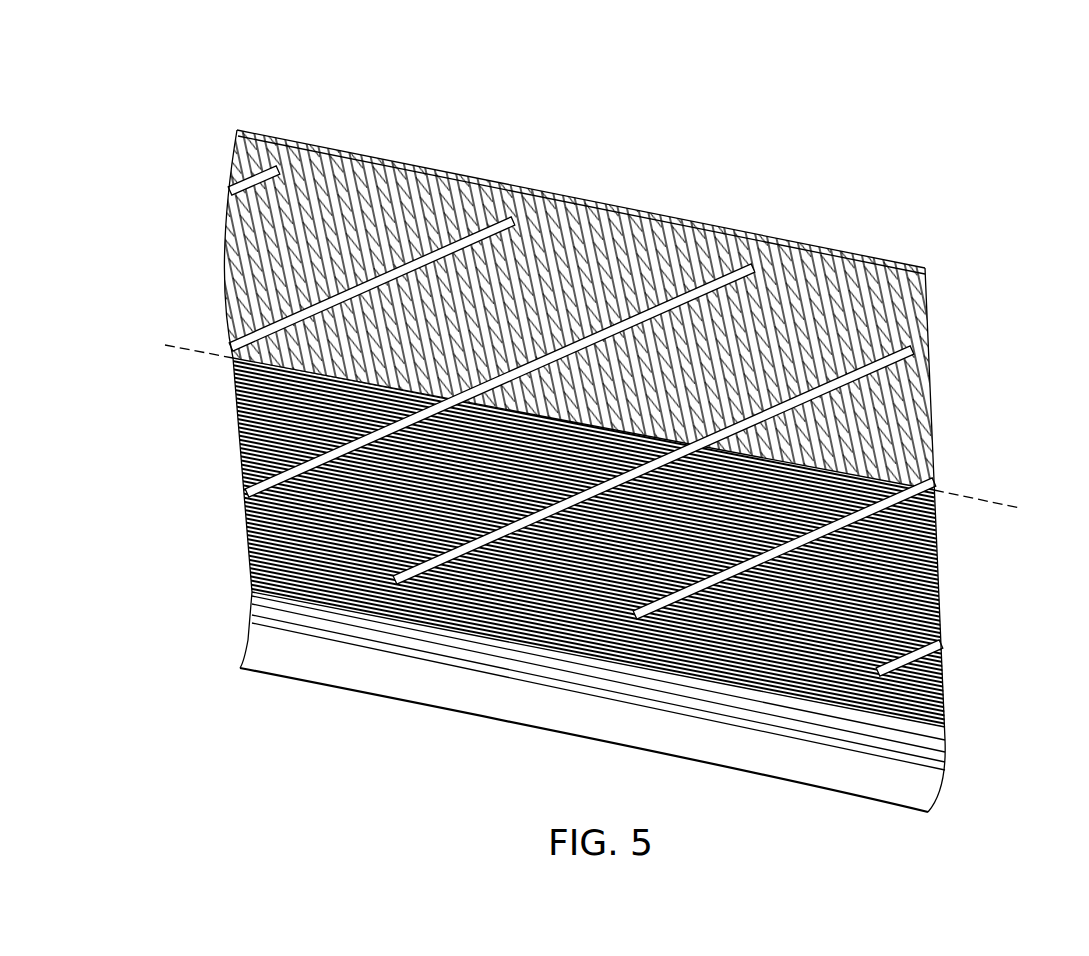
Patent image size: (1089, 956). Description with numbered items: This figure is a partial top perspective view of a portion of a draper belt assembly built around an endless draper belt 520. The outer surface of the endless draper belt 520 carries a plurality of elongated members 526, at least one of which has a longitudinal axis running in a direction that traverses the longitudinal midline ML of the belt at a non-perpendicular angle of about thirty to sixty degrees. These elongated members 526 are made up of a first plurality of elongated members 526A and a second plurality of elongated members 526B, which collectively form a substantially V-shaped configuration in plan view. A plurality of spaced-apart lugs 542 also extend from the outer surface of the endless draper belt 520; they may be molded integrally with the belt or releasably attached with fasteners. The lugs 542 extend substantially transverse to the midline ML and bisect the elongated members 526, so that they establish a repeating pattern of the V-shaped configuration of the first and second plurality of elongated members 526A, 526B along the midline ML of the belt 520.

The endless draper belt 520 is at (603, 427).
The elongated members 526 is at (378, 166).
The first plurality of elongated members 526A is at (518, 653).
The second plurality of elongated members 526B is at (590, 266).
The lugs 542 is at (610, 230).
The longitudinal midline ML is at (1020, 504).